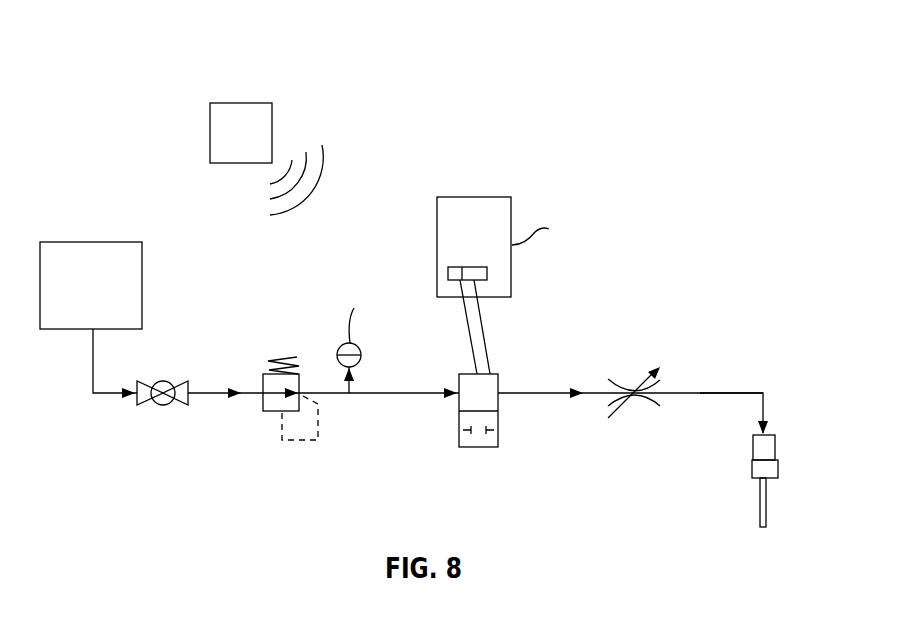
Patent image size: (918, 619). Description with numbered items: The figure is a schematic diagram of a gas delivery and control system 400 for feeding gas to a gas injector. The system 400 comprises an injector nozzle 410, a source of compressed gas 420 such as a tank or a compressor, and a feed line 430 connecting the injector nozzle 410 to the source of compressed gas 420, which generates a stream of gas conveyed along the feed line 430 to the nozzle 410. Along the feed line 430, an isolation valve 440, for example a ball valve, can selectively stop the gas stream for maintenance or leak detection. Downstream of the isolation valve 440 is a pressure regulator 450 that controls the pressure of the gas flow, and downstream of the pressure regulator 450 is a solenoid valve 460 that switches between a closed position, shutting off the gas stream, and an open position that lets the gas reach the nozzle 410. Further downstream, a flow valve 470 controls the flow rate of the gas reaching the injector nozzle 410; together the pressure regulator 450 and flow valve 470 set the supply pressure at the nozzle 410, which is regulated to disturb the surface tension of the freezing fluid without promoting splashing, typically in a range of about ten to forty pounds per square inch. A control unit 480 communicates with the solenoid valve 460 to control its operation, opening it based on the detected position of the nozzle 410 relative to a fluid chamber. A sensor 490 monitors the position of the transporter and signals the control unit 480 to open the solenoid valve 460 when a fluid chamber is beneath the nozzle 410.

The gas delivery and control system 400 is at (124, 36).
The injector nozzle 410 is at (777, 448).
The source of compressed gas 420 is at (88, 250).
The feed line 430 is at (745, 391).
The isolation valve 440 is at (164, 407).
The pressure regulator 450 is at (262, 380).
The solenoid valve 460 is at (470, 448).
The flow valve 470 is at (637, 387).
The control unit 480 is at (500, 276).
The sensor 490 is at (219, 135).